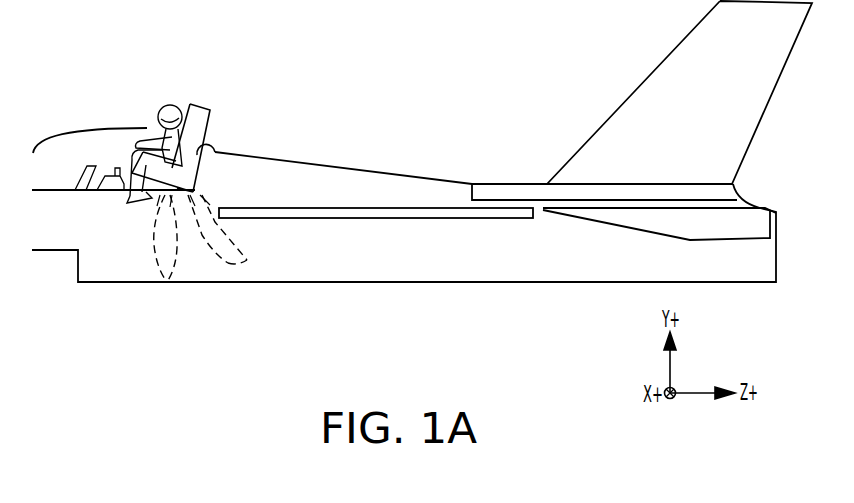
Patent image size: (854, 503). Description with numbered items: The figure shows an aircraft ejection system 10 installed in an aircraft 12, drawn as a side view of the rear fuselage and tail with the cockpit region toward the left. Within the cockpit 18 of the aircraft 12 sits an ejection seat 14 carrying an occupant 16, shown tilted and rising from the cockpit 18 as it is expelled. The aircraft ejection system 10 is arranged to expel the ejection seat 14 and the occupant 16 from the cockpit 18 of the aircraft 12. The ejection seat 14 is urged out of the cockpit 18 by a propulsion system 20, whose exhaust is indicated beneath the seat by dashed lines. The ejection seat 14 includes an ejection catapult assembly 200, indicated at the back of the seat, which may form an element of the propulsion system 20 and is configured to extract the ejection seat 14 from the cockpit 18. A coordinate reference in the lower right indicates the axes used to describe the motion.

The aircraft ejection system 10 is at (422, 141).
The aircraft 12 is at (437, 258).
The ejection seat 14 is at (210, 116).
The occupant 16 is at (163, 111).
The cockpit 18 is at (65, 173).
The propulsion system 20 is at (163, 237).
The ejection catapult assembly 200 is at (190, 145).